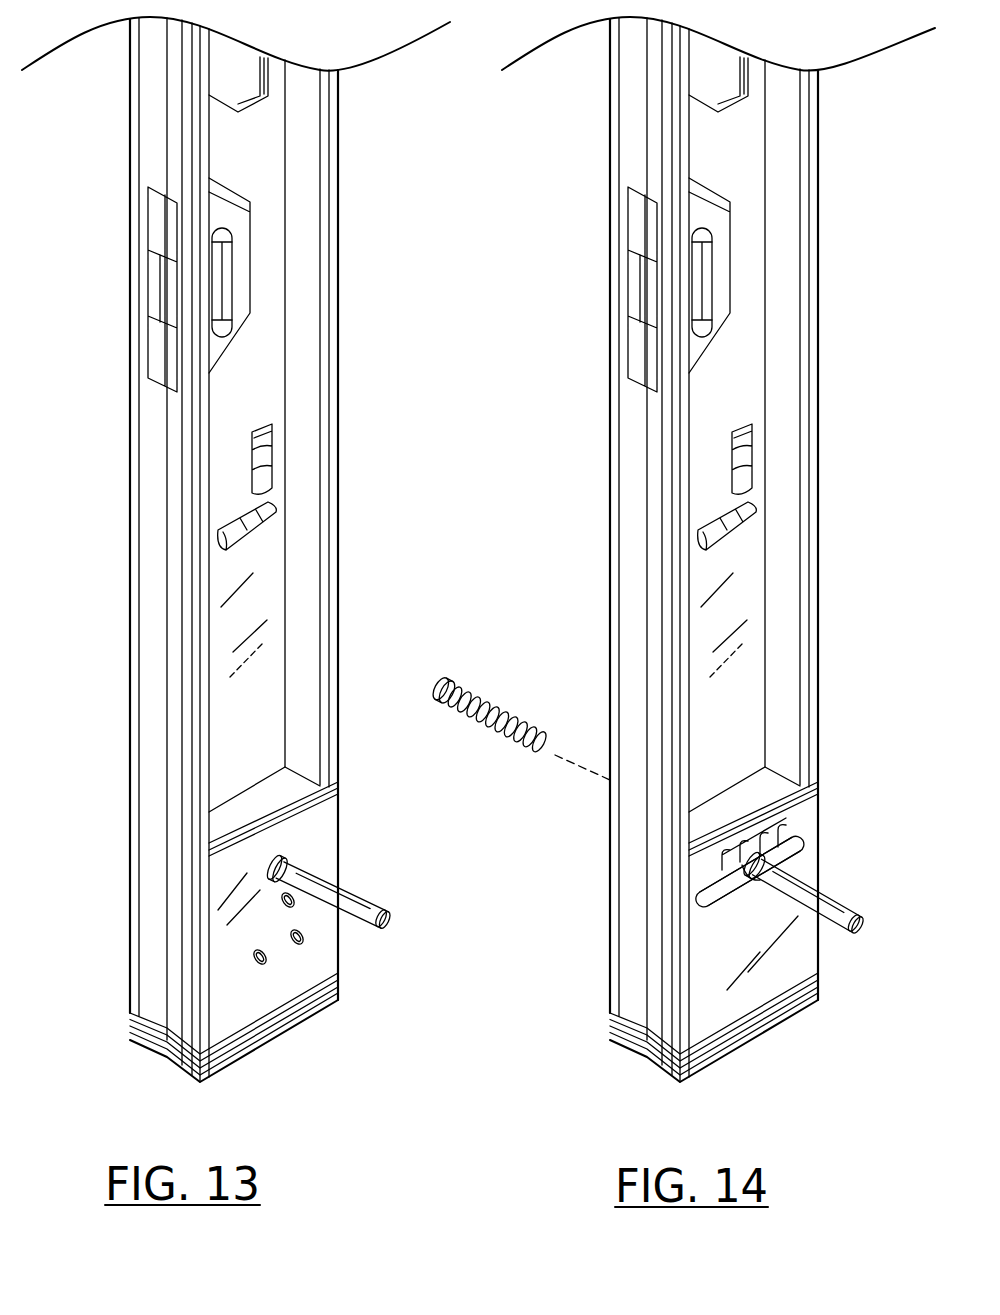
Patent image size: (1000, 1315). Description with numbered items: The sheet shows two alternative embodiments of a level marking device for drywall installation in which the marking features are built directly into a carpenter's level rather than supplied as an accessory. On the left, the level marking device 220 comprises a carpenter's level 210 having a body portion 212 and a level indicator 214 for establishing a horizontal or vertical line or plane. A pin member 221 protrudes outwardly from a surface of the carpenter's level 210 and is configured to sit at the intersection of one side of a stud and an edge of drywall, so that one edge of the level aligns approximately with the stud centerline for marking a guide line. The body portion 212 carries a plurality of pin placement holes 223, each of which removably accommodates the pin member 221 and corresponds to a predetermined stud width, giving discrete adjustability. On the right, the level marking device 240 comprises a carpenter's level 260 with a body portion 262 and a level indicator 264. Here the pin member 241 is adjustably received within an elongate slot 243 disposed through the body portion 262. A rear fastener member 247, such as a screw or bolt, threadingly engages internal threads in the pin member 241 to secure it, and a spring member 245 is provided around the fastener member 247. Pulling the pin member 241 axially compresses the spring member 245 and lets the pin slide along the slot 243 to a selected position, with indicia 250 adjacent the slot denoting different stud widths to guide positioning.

In FIG. 13, the carpenter's level 210 is at (302, 397).
In FIG. 13, the body portion 212 is at (305, 830).
In FIG. 13, the level indicator 214 is at (268, 466).
In FIG. 13, the level marking device 220 is at (318, 1035).
In FIG. 13, the pin member 221 is at (355, 893).
In FIG. 13, the pin placement holes 223 is at (294, 940).
In FIG. 14, the level marking device 240 is at (783, 1042).
In FIG. 14, the pin member 241 is at (835, 897).
In FIG. 14, the elongate slot 243 is at (810, 812).
In FIG. 14, the spring member 245 is at (542, 733).
In FIG. 14, the fastener member 247 is at (443, 688).
In FIG. 14, the indicia 250 is at (772, 820).
In FIG. 14, the carpenter's level 260 is at (782, 376).
In FIG. 14, the body portion 262 is at (770, 960).
In FIG. 14, the level indicator 264 is at (745, 460).